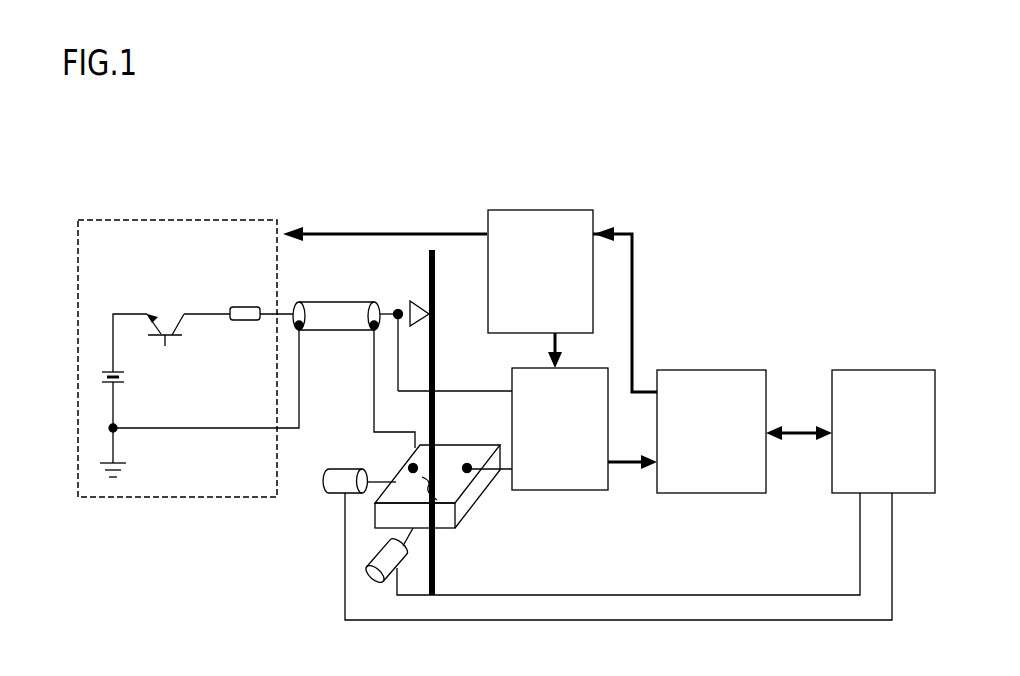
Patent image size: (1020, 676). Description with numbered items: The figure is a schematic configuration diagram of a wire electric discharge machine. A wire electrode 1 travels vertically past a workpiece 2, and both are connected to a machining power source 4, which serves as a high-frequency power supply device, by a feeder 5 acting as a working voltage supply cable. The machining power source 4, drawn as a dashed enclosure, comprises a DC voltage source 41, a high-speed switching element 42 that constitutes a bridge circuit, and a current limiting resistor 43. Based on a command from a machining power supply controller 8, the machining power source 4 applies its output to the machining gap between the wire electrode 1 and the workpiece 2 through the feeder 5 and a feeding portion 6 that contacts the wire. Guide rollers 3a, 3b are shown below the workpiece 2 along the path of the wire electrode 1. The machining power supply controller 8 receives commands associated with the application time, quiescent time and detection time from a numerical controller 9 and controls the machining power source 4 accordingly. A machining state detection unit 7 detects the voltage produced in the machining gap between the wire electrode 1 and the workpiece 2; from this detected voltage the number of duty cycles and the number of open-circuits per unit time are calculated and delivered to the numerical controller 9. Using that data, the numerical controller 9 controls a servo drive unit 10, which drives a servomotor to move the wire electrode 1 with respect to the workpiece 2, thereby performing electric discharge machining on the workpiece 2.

The wire electrode 1 is at (437, 343).
The workpiece 2 is at (450, 453).
The lower guide roller 3a is at (321, 490).
The lower guide roller 3b is at (372, 585).
The machining power source 4 is at (175, 218).
The DC voltage source 41 is at (142, 375).
The high-speed switching element 42 is at (161, 308).
The current limiting resistor 43 is at (244, 307).
The feeder 5 is at (326, 301).
The feeding portion 6 is at (410, 301).
The machining state detection unit 7 is at (553, 491).
The machining power supply controller 8 is at (560, 208).
The numerical controller 9 is at (697, 370).
The servo drive unit 10 is at (841, 370).